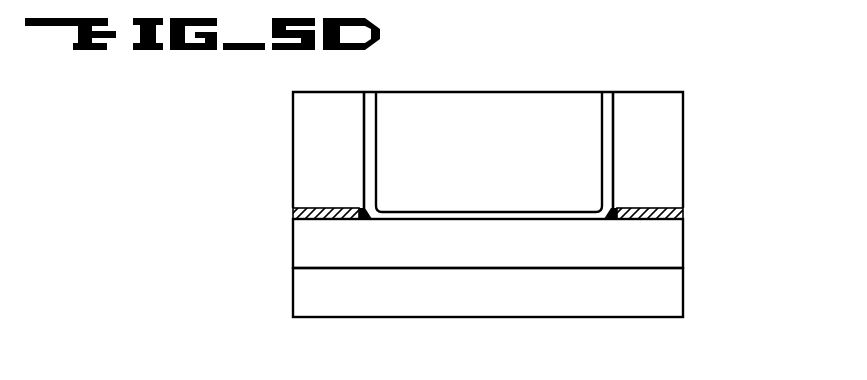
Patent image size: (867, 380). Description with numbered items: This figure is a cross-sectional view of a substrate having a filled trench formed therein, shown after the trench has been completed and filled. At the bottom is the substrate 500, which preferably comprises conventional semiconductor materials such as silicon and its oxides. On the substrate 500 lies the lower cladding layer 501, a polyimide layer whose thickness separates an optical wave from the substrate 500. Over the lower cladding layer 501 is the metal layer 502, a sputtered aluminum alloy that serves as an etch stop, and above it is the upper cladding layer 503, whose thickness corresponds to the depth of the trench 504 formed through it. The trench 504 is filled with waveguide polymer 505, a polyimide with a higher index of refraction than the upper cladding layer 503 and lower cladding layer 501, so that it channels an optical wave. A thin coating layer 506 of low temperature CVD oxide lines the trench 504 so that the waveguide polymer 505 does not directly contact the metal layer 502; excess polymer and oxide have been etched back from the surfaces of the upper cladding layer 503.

The substrate 500 is at (677, 295).
The lower cladding layer 501 is at (672, 248).
The metal layer 502 is at (293, 215).
The upper cladding layer 503 is at (310, 116).
The trench 504 is at (358, 163).
The waveguide polymer 505 is at (503, 165).
The coating layer 506 is at (373, 130).